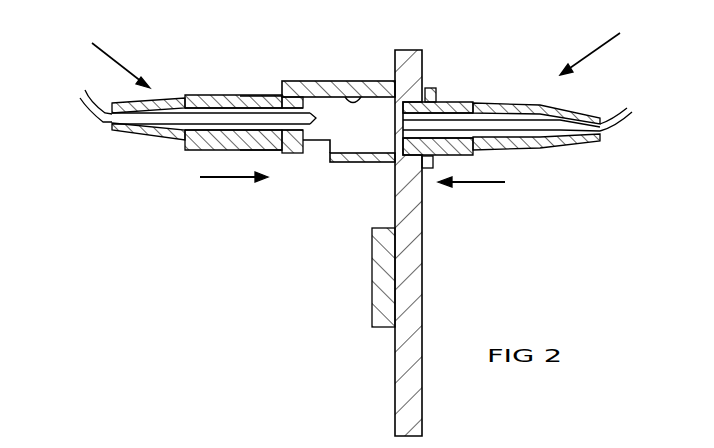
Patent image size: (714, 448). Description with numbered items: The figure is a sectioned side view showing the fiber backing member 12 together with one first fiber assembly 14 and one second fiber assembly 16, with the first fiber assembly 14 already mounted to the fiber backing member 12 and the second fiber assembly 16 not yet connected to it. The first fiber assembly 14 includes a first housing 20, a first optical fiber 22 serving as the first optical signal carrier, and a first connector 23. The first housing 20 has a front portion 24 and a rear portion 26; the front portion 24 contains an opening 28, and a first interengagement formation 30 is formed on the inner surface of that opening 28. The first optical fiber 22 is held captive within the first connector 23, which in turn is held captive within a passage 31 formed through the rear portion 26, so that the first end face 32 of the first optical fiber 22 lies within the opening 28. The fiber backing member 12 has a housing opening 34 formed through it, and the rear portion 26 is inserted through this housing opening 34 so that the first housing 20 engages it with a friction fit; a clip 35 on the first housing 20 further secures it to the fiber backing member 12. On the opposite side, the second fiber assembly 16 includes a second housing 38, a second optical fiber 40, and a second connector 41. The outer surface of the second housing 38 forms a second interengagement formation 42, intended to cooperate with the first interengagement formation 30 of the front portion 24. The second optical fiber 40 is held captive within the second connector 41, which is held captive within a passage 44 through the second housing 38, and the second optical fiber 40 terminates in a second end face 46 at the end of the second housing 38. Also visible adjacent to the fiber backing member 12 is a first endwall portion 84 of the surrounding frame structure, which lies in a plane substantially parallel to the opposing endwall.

The fiber backing member 12 is at (412, 50).
The first fiber assembly 14 is at (590, 51).
The second fiber assembly 16 is at (121, 63).
The first housing 20 is at (461, 103).
The first optical fiber 22 is at (625, 119).
The first connector 23 is at (452, 102).
The front portion 24 is at (313, 90).
The rear portion 26 is at (512, 105).
The opening 28 is at (354, 138).
The first interengagement formation 30 is at (361, 88).
The passage 31 is at (552, 150).
The first end face 32 is at (392, 120).
The housing opening 34 is at (438, 85).
The clip 35 is at (426, 170).
The second housing 38 is at (246, 96).
The second optical fiber 40 is at (80, 104).
The second connector 41 is at (263, 108).
The second interengagement formation 42 is at (190, 96).
The passage 44 is at (173, 131).
The second end face 46 is at (305, 132).
The first endwall portion 84 is at (374, 286).